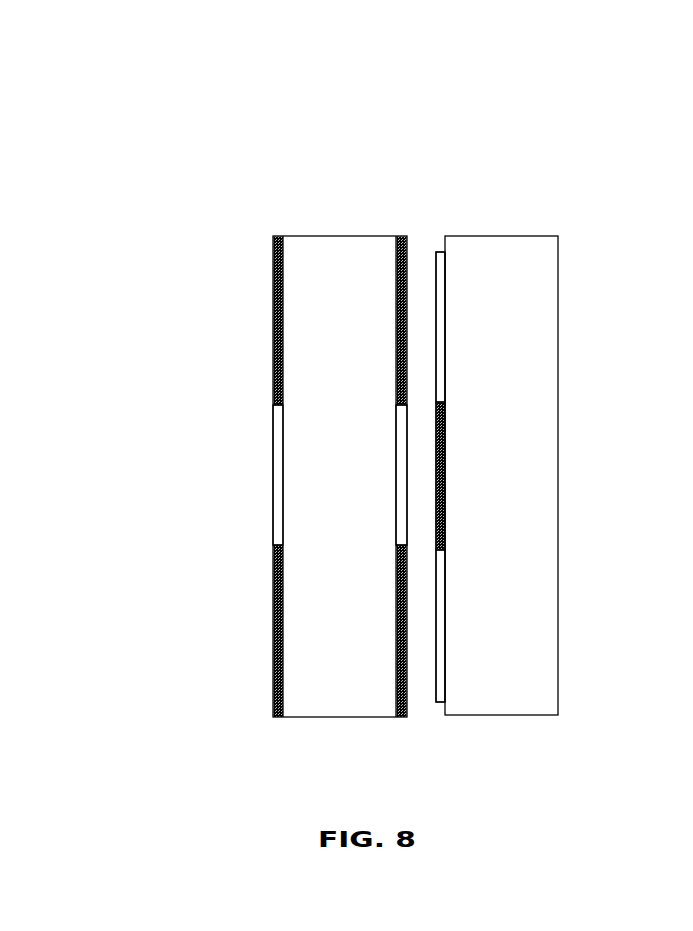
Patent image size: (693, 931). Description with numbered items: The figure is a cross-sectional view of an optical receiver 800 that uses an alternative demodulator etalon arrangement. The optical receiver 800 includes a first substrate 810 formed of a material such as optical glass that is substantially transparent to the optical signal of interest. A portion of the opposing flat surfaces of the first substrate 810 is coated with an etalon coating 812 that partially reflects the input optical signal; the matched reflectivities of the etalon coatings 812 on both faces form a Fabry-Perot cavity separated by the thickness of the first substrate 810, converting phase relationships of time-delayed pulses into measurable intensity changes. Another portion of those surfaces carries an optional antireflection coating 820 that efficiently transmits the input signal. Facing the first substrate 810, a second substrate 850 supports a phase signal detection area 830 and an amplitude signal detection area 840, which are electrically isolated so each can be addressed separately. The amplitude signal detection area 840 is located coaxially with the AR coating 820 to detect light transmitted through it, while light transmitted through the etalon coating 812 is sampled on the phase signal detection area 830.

The optical receiver 800 is at (238, 126).
The first substrate 810 is at (338, 236).
The etalon coating 812 is at (272, 272).
The antireflection (AR) coating 820 is at (393, 478).
The phase signal detection area 830 is at (447, 327).
The amplitude signal detection area 840 is at (447, 452).
The second substrate 850 is at (510, 236).